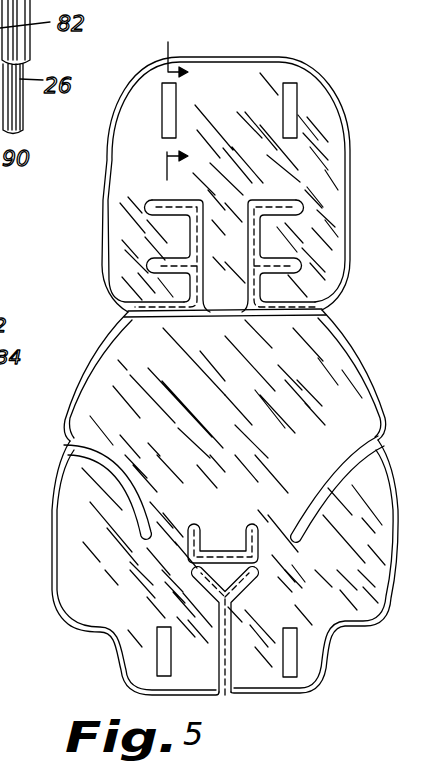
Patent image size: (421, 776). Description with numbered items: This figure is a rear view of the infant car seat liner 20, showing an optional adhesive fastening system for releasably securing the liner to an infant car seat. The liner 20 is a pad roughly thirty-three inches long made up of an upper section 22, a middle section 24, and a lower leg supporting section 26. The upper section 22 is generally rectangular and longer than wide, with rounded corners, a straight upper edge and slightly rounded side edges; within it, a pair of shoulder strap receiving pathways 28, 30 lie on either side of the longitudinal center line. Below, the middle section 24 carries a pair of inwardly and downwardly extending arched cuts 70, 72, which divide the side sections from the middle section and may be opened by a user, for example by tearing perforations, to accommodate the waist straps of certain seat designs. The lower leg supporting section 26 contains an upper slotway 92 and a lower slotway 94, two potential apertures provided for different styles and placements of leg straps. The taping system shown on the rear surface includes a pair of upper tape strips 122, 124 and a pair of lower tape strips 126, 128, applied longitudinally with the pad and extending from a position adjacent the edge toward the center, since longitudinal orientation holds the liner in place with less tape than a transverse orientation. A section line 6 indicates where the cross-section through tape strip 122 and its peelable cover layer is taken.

The section line 6- 6 is at (165, 111).
The infant car seat liner 20 is at (343, 91).
The upper section 22 is at (342, 176).
The middle section 24 is at (340, 354).
The lower leg supporting section 26 is at (338, 614).
The shoulder strap receiving pathway 28 is at (285, 247).
The shoulder strap receiving pathway 30 is at (167, 233).
The arched cut 70 is at (322, 486).
The arched cut 72 is at (115, 468).
The upper slotway 92 is at (215, 530).
The lower slotway 94 is at (202, 593).
The upper tape strip 122 is at (170, 92).
The upper tape strip 124 is at (279, 93).
The lower tape strip 126 is at (158, 645).
The lower tape strip 128 is at (292, 670).